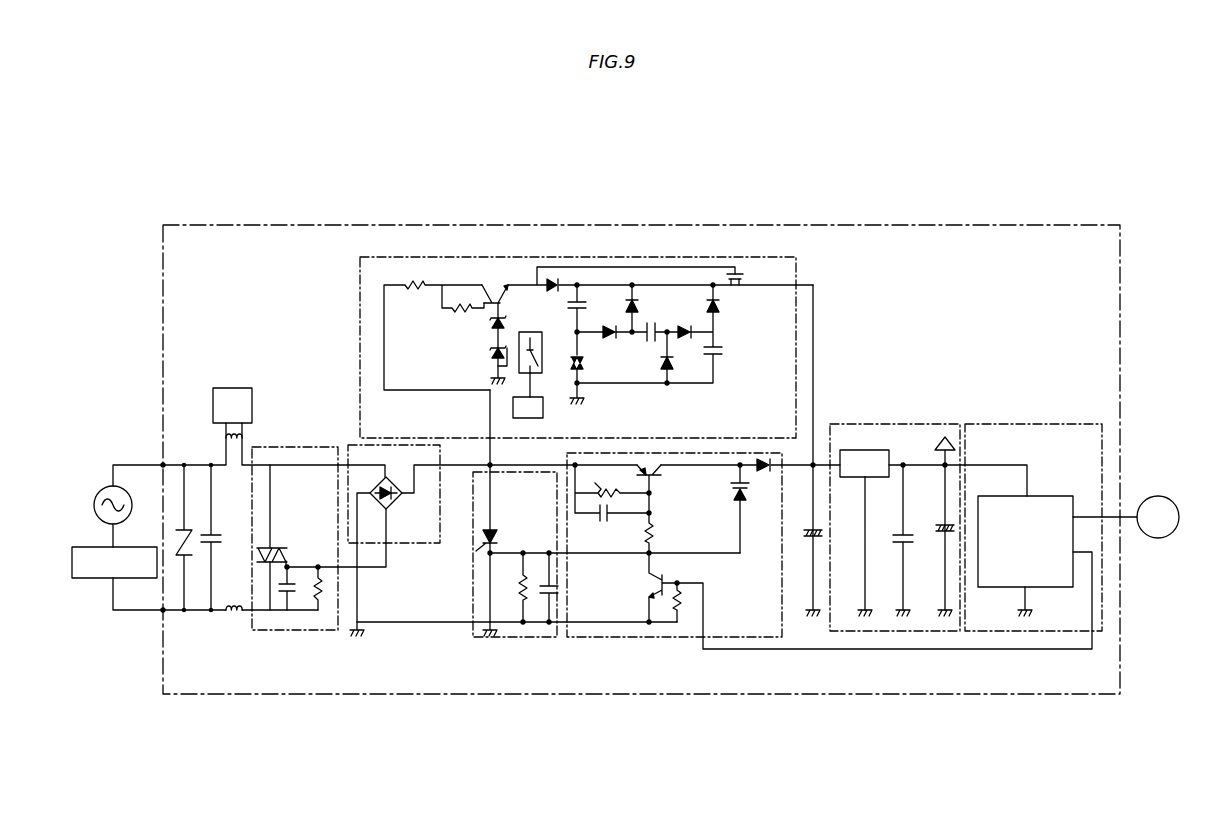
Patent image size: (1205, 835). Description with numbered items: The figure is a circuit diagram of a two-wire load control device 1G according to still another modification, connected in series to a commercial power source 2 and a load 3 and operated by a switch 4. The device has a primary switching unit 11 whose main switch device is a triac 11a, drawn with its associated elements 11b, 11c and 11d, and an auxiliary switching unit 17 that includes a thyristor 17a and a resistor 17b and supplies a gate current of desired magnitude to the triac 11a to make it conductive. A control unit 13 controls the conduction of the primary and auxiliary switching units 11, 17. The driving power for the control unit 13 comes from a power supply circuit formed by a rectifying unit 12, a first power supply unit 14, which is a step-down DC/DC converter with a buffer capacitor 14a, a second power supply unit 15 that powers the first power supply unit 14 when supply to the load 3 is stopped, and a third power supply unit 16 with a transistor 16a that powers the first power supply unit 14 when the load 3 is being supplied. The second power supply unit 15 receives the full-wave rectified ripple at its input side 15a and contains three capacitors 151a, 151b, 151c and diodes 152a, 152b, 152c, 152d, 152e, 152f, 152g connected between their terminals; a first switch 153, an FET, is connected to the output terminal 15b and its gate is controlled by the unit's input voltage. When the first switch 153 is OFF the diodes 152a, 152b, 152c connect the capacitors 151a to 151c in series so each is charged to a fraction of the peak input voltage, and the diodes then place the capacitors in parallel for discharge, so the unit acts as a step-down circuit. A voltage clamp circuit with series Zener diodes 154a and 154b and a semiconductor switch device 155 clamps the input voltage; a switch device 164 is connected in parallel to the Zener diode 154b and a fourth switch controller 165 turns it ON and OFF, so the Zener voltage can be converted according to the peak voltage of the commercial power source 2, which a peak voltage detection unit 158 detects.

The two-wire load control device 1G is at (482, 127).
The commercial power source 2 is at (102, 491).
The load 3 is at (88, 547).
The switch 4 is at (1158, 538).
The primary switching unit 11 is at (322, 446).
The triac 11a is at (265, 545).
The triac connection line 11b is at (276, 596).
The capacitor 11c is at (298, 597).
The resistor 11d is at (323, 605).
The rectifying unit 12 is at (407, 545).
The control unit 13 is at (1064, 495).
The first power supply unit 14 is at (896, 424).
The buffer capacitor 14a is at (817, 540).
The second power supply unit 15 is at (770, 252).
The input line 15a is at (478, 458).
The output terminal 15b is at (816, 500).
The third power supply unit 16 is at (800, 458).
The transistor 16a is at (741, 502).
The auxiliary switching unit 17 is at (503, 638).
The thyristor 17a is at (484, 546).
The resistor 17b is at (527, 600).
The capacitor 151a is at (579, 301).
The capacitor 151b is at (649, 343).
The capacitor 151c is at (721, 352).
The diode 152a is at (549, 279).
The diode 152b is at (607, 340).
The diode 152c is at (686, 327).
The diode 152d is at (635, 299).
The diode 152e is at (571, 362).
The diode 152f is at (675, 362).
The diode 152g is at (711, 299).
The first switch 153 is at (747, 272).
The Zener diode 154a is at (492, 323).
The Zener diode 154b is at (492, 353).
The semiconductor switch device 155 is at (494, 296).
The peak voltage detection unit 158 is at (222, 388).
The switch device 164 is at (541, 374).
The fourth switch controller 165 is at (523, 419).